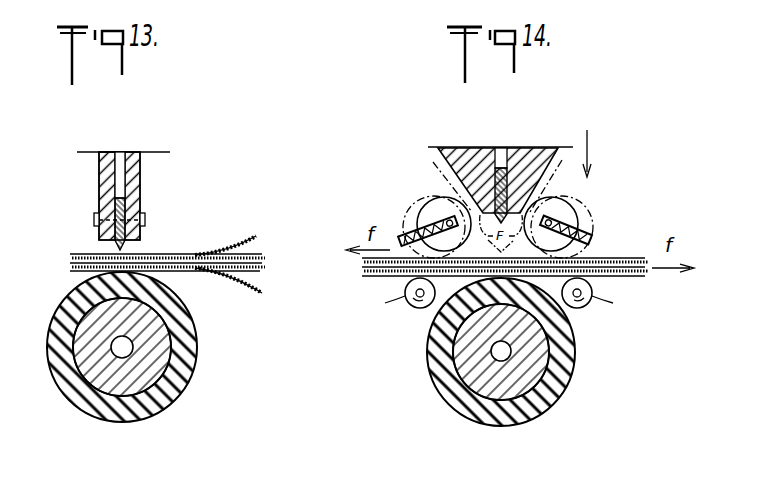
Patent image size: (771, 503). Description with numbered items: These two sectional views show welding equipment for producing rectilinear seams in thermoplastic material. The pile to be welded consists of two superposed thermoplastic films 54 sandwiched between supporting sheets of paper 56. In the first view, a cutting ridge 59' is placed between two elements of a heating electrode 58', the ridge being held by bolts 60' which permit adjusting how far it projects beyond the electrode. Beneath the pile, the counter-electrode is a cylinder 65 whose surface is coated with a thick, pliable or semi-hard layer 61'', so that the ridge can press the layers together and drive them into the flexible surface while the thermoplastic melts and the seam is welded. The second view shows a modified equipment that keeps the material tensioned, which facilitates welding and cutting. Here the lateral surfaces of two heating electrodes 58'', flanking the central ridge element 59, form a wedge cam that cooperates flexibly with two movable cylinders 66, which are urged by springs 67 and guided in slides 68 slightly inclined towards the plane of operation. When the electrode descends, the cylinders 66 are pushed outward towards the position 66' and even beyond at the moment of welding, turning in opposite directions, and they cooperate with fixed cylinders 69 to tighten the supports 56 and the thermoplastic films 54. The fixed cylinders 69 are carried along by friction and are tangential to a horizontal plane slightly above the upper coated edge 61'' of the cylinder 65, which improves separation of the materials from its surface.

In FIG. 13, the thermoplastic films 54 is at (275, 251).
In FIG. 13, the sheets of paper 56 is at (235, 242).
In FIG. 13, the heating electrode 58' is at (120, 196).
In FIG. 14, the heating electrodes 58'' is at (498, 161).
In FIG. 14, the element forming a thin projecting ridge 59 is at (494, 167).
In FIG. 13, the cutting ridge 59' is at (154, 224).
In FIG. 13, the bolts 60' is at (148, 210).
In FIG. 13, the coating layer 61'' is at (151, 347).
In FIG. 14, the coating layer 61'' is at (528, 352).
In FIG. 13, the cylinder 65 is at (156, 376).
In FIG. 14, the cylinder 65 is at (498, 392).
In FIG. 14, the movable cylinders 66 is at (580, 219).
In FIG. 14, the outward position of movable cylinders 66' is at (428, 217).
In FIG. 14, the springs 67 is at (586, 229).
In FIG. 14, the slides 68 is at (578, 249).
In FIG. 14, the fixed cylinders 69 is at (411, 306).